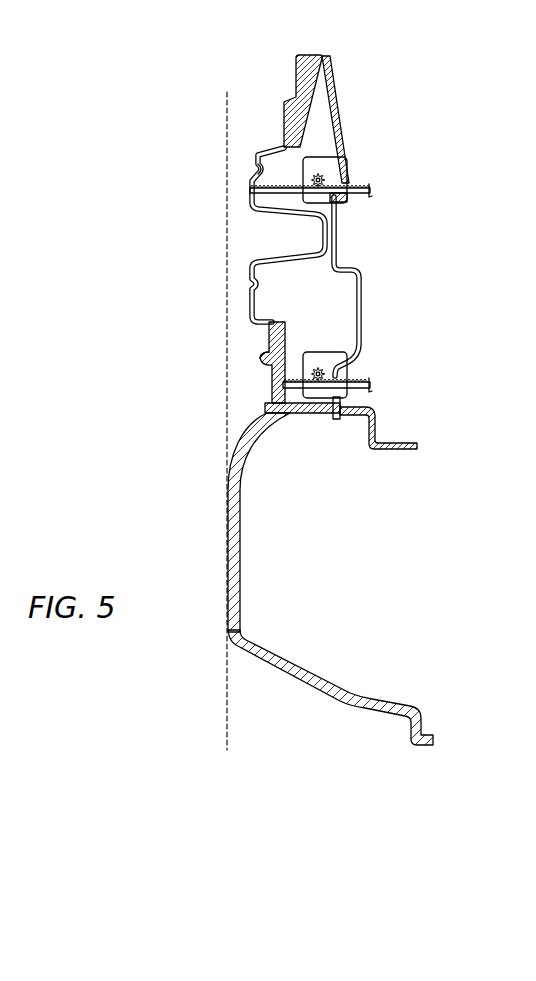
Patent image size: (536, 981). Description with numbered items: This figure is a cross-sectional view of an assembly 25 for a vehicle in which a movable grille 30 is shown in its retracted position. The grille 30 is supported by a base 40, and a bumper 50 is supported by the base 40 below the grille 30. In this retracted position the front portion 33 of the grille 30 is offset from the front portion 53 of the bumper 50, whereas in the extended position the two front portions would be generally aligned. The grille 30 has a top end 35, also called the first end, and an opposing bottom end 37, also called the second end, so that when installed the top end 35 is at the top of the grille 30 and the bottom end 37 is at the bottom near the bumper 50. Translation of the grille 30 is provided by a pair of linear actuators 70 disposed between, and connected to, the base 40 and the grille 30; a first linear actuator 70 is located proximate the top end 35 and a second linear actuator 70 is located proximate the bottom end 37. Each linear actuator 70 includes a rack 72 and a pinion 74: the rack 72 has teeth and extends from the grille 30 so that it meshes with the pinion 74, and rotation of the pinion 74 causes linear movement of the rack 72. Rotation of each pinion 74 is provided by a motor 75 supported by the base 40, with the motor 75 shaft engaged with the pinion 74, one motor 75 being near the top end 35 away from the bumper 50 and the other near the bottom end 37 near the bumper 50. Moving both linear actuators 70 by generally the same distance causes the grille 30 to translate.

The assembly 25 is at (442, 87).
The movable grille 30 is at (297, 72).
The front portion of the grille 33 is at (247, 303).
The top end 35 is at (311, 56).
The bottom end 37 is at (262, 402).
The base 40 is at (347, 143).
The bumper 50 is at (318, 690).
The front portion of the bumper 53 is at (228, 542).
The linear actuator 70 is at (313, 178).
The rack 72 is at (360, 201).
The pinion 74 is at (324, 179).
The motor 75 is at (320, 157).